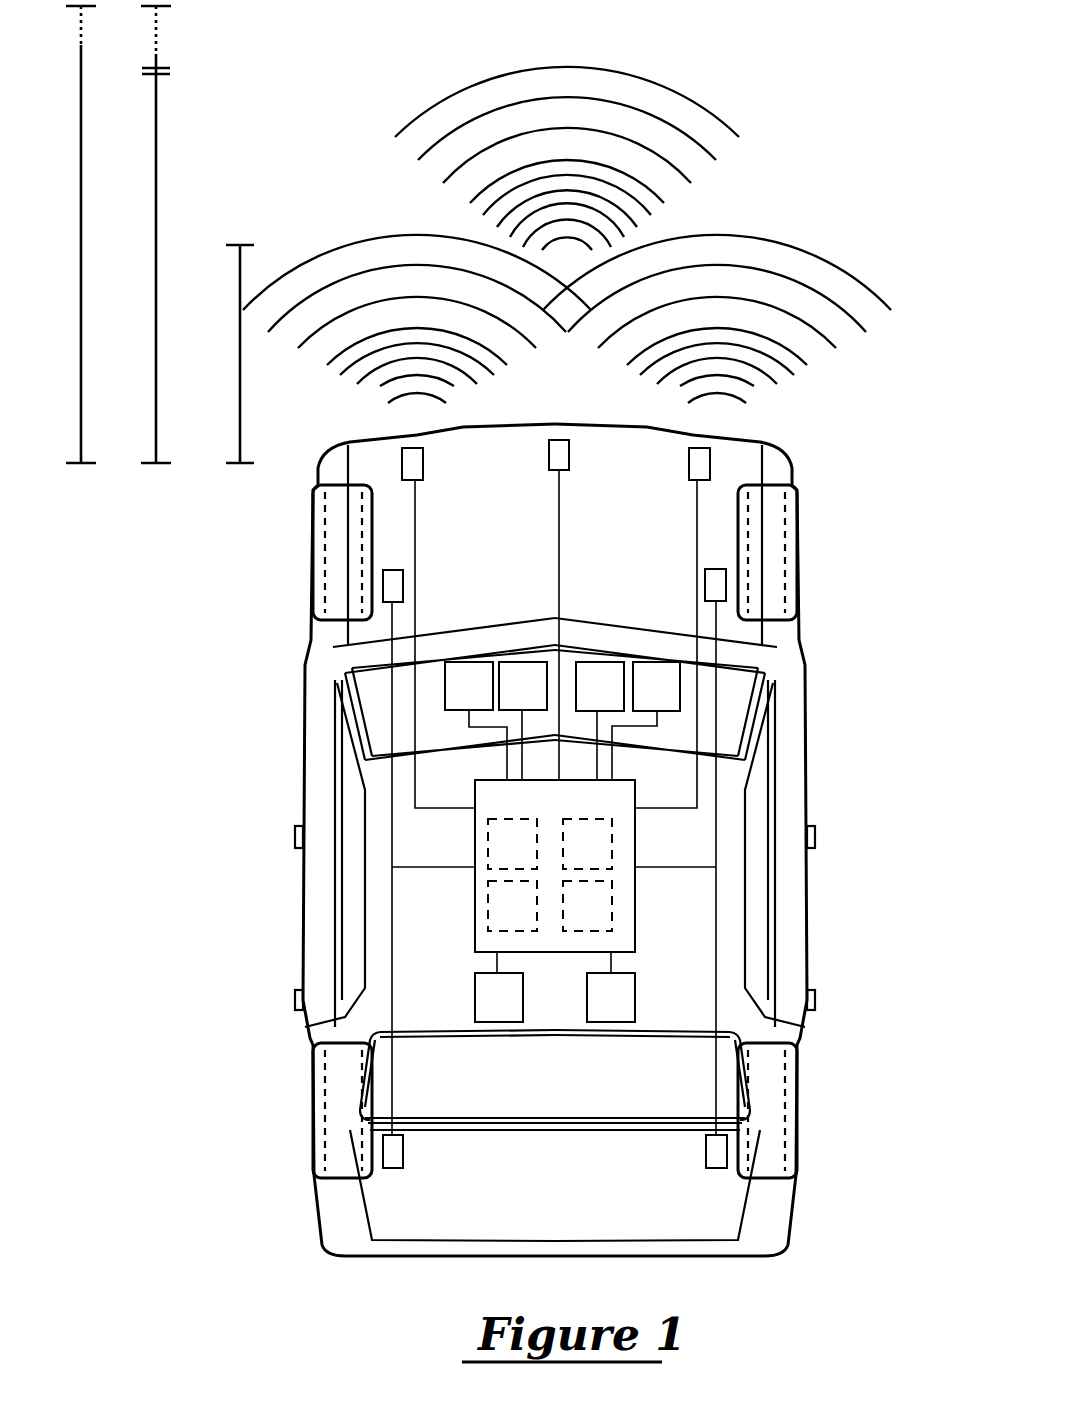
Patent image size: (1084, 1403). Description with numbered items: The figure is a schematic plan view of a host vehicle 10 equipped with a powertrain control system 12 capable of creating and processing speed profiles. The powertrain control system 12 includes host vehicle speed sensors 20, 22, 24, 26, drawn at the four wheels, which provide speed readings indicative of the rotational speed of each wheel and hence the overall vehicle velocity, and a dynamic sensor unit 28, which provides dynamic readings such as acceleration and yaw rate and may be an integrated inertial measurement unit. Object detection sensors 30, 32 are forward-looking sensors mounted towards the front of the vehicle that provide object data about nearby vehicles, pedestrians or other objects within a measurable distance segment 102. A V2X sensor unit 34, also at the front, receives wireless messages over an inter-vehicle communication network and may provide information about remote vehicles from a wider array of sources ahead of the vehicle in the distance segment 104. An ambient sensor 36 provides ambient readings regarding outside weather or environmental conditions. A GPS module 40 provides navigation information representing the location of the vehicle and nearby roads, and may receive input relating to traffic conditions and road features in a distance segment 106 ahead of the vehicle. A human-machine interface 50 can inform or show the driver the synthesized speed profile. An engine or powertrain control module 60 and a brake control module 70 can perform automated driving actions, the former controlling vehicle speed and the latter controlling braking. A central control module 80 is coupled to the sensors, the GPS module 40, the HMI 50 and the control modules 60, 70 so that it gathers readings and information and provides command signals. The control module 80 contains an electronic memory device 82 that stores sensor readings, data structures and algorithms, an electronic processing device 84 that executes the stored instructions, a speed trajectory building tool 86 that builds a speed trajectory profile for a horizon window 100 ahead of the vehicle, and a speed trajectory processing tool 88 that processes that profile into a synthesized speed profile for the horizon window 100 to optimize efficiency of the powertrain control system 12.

The host vehicle 10 is at (880, 538).
The powertrain control system 12 is at (282, 950).
The host vehicle speed sensor 20 is at (718, 605).
The host vehicle speed sensor 22 is at (726, 1168).
The host vehicle speed sensor 24 is at (384, 1168).
The host vehicle speed sensor 26 is at (385, 602).
The dynamic sensor unit 28 is at (499, 987).
The object detection sensor 30 is at (423, 460).
The object detection sensor 32 is at (711, 462).
The V2X sensor unit 34 is at (570, 446).
The ambient sensor 36 is at (611, 987).
The GPS module 40 is at (476, 721).
The human-machine interface (HMI) 50 is at (523, 721).
The engine or powertrain control module 60 is at (600, 721).
The brake control module 70 is at (646, 721).
The control module 80 is at (555, 866).
The electronic memory device 82 is at (512, 844).
The electronic processing device 84 is at (587, 844).
The speed trajectory building tool 86 is at (512, 906).
The speed trajectory processing tool 88 is at (587, 906).
The horizon window 100 is at (81, 428).
The distance segment 102 is at (241, 447).
The distance segment 104 is at (157, 428).
The distance segment 106 is at (157, 67).